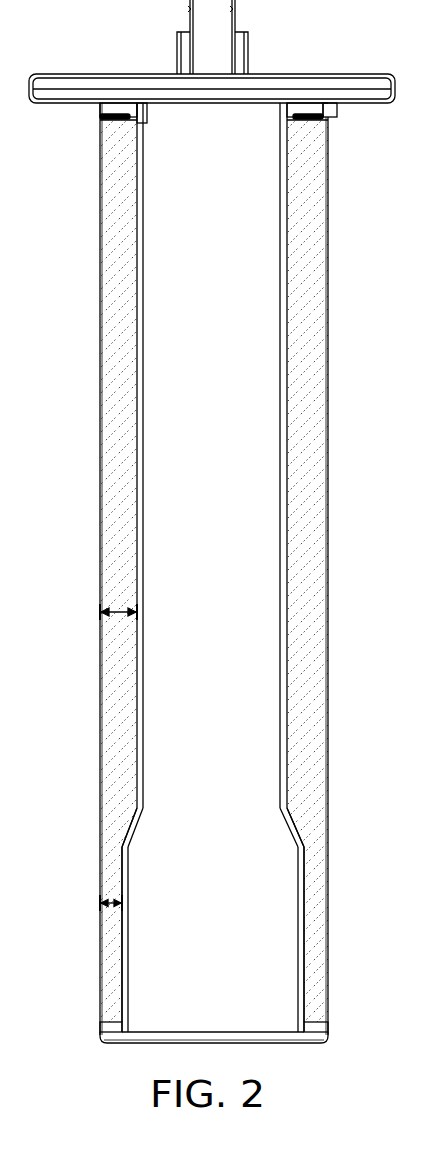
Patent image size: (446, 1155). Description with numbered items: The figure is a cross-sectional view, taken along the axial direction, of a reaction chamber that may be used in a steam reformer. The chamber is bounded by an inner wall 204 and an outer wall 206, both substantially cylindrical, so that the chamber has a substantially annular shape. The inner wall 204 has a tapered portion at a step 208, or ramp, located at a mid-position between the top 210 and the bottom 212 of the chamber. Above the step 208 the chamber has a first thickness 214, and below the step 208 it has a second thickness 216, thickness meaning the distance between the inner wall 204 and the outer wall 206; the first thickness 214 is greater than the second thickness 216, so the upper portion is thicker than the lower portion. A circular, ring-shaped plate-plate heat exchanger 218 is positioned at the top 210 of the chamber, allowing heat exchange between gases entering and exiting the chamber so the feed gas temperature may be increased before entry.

The inner wall 204 is at (280, 711).
The outer wall 206 is at (328, 608).
The step 208 is at (300, 828).
The top 210 is at (336, 136).
The bottom 212 is at (337, 1000).
The first thickness 214 is at (120, 608).
The second thickness 216 is at (116, 897).
The heat exchanger 218 is at (339, 66).